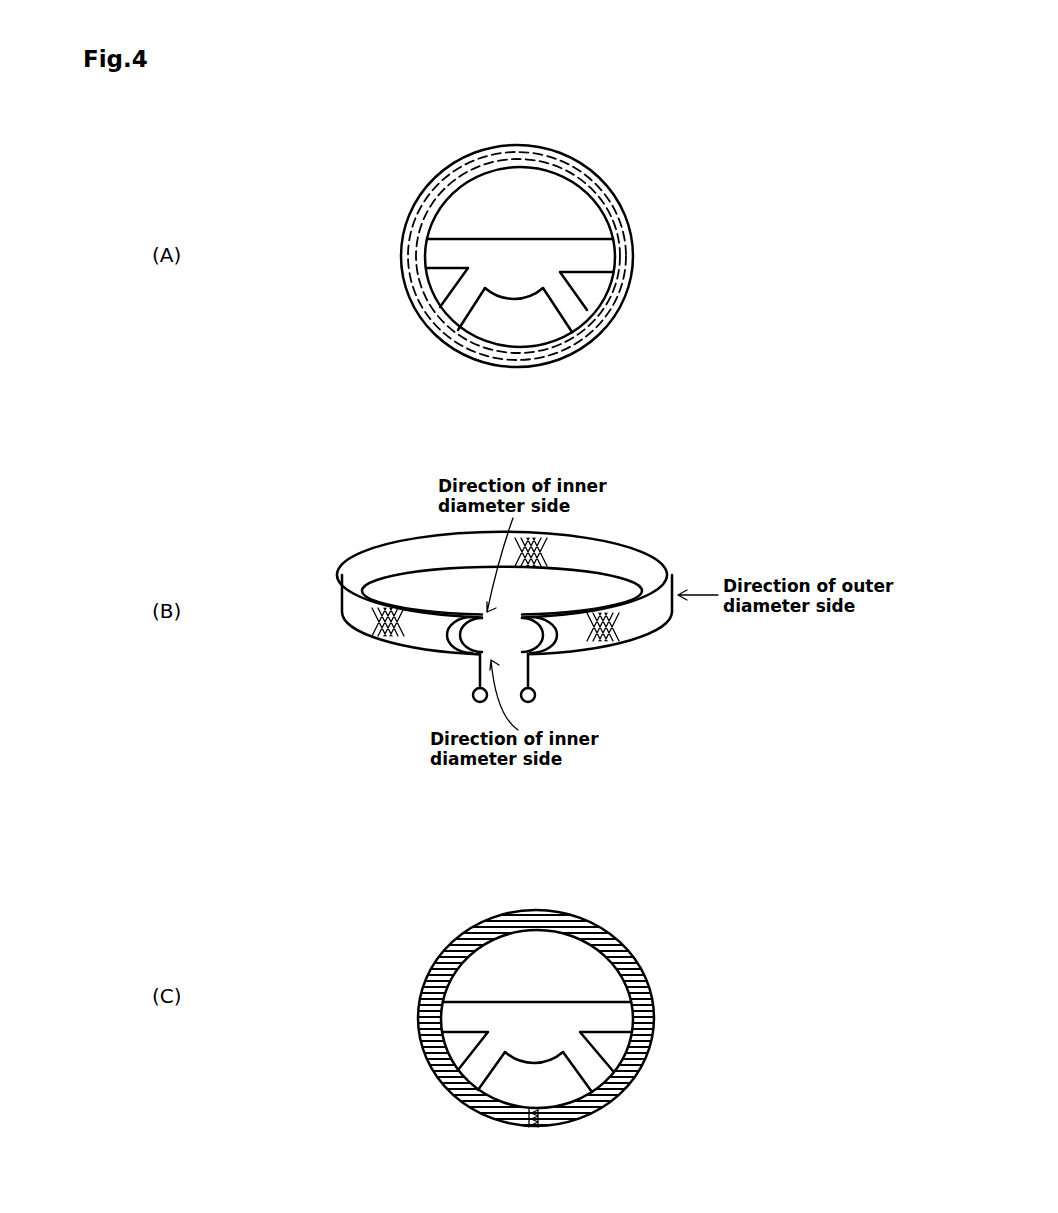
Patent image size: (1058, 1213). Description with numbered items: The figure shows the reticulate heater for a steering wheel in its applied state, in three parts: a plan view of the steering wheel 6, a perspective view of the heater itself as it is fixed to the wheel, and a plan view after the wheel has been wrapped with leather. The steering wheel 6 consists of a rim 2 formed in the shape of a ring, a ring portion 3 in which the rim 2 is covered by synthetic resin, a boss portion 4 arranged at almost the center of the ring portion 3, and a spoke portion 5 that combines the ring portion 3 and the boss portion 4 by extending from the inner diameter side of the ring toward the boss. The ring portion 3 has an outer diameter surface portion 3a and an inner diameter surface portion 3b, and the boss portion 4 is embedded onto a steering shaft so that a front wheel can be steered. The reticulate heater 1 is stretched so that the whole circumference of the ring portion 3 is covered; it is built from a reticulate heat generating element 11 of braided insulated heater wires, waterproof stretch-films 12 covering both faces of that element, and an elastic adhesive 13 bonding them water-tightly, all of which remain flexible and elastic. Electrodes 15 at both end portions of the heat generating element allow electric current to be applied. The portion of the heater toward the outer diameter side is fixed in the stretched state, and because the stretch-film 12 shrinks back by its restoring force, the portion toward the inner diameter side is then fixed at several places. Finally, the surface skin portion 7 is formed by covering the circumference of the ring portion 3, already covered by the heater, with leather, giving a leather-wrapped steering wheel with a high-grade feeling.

The reticulate heater 1 is at (564, 833).
The rim 2 is at (612, 199).
The ring portion 3 is at (545, 235).
The outer diameter surface portion 3a is at (498, 146).
The inner diameter surface portion 3b is at (496, 168).
The boss portion 4 is at (515, 255).
The spoke portion 5 is at (445, 250).
The steering wheel 6 is at (596, 601).
The surface skin portion 7 is at (653, 1022).
The reticulate heat generating element 11 is at (564, 845).
The waterproof stretch-film 12 is at (564, 845).
The elastic adhesive 13 is at (564, 845).
The electrode 15 is at (457, 631).